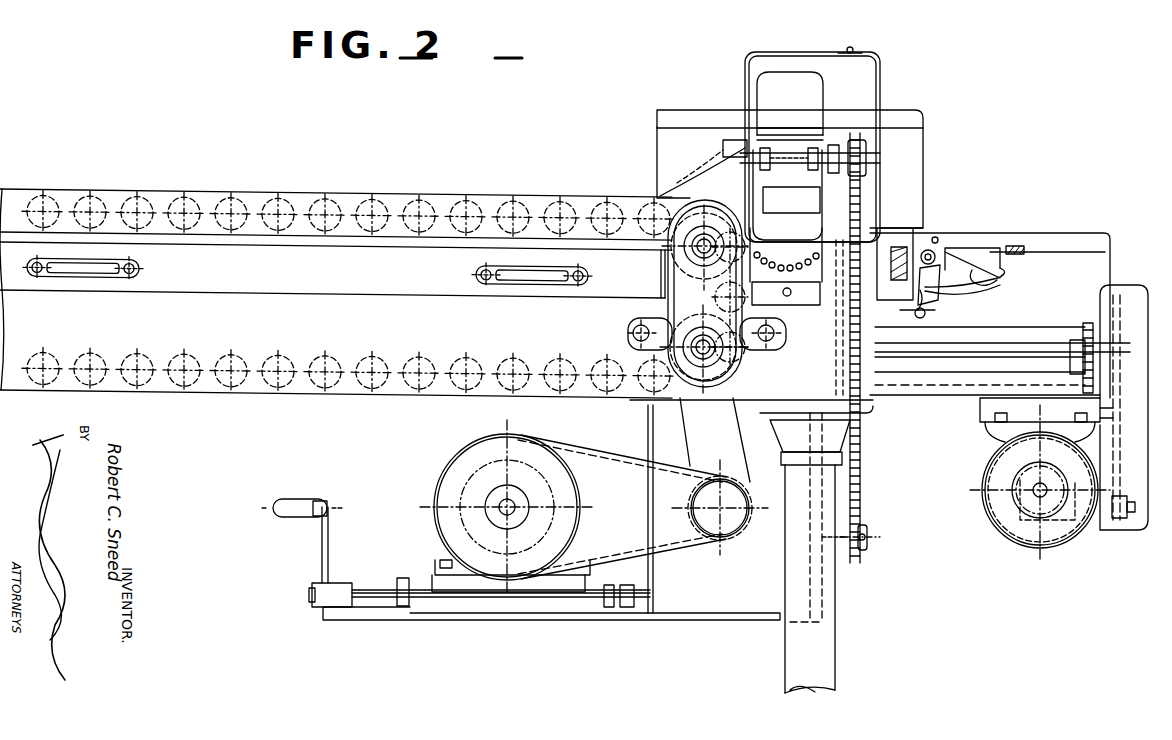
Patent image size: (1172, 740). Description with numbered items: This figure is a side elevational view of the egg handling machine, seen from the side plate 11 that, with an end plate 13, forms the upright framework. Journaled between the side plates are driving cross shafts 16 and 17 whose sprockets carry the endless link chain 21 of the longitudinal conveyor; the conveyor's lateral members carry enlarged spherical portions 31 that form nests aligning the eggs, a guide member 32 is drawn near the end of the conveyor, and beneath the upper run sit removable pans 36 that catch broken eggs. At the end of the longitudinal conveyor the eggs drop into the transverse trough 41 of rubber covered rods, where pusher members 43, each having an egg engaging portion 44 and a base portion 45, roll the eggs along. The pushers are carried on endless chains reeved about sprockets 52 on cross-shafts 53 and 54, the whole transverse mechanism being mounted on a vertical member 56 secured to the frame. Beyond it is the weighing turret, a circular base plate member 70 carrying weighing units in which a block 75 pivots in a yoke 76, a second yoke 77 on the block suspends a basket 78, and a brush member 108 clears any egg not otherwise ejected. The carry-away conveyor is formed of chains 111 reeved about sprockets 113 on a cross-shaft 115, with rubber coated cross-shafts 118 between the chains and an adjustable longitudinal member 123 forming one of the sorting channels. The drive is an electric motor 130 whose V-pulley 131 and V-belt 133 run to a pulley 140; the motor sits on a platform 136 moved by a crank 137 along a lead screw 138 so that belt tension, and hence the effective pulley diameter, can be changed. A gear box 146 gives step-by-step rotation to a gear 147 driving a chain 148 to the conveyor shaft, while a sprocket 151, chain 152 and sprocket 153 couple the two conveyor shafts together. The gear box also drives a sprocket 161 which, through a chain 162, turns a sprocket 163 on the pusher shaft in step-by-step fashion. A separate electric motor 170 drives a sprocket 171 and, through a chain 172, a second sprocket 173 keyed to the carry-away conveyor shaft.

The side plate 11 is at (255, 392).
The end plate 13 is at (886, 192).
The cross shaft 16 is at (700, 244).
The cross shaft 17 is at (694, 344).
The endless link chain 21 is at (444, 192).
The spherical portion 31 is at (250, 192).
The curved guide bracket 32 is at (683, 176).
The removable pan 36 is at (423, 294).
The transverse trough 41 is at (801, 277).
The pusher member 43 is at (827, 88).
The egg engaging portion 44 is at (822, 108).
The base portion 45 is at (791, 200).
The sprocket 52 is at (814, 176).
The cross-shaft 53 is at (868, 156).
The cross-shaft 54 is at (787, 150).
The vertical member 56 is at (840, 378).
The circular base plate member 70 is at (890, 298).
The block 75 is at (940, 270).
The yoke 76 is at (927, 250).
The second yoke 77 is at (980, 248).
The basket 78 is at (1004, 276).
The brush member 108 is at (1020, 246).
The chain 111 is at (1089, 323).
The sprocket 113 is at (1075, 343).
The cross-shaft 115 is at (1025, 343).
The cross-shaft 118 is at (998, 327).
The longitudinal member 123 is at (936, 312).
The electric motor 130 is at (439, 481).
The V-pulley 131 is at (553, 470).
The V-belt 133 is at (606, 464).
The platform 136 is at (405, 577).
The crank 137 is at (290, 510).
The lead screw 138 is at (389, 593).
The pulley 140 is at (708, 538).
The gear box 146 is at (748, 590).
The gear 147 is at (736, 538).
The chain 148 is at (688, 466).
The sprocket 151 is at (734, 380).
The chain 152 is at (668, 289).
The sprocket 153 is at (667, 263).
The sprocket 161 is at (868, 543).
The chain 162 is at (860, 475).
The sprocket 163 is at (868, 172).
The electric motor 170 is at (1030, 536).
The sprocket 171 is at (1122, 520).
The chain 172 is at (1124, 444).
The second sprocket 173 is at (1136, 310).